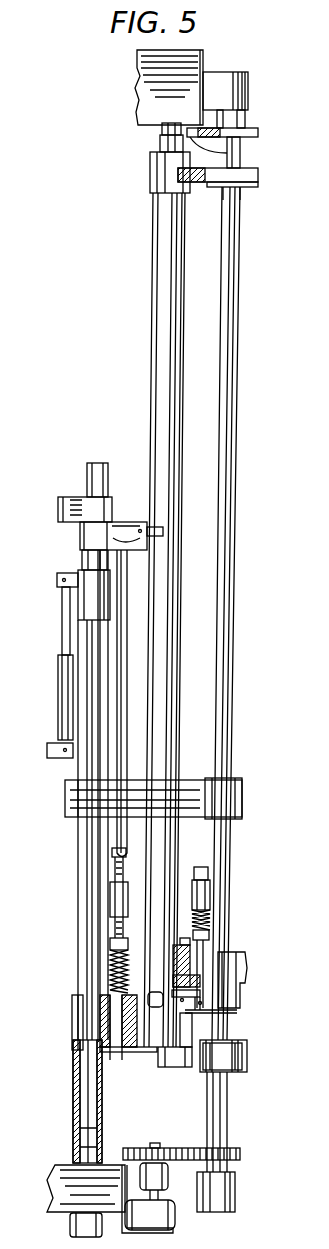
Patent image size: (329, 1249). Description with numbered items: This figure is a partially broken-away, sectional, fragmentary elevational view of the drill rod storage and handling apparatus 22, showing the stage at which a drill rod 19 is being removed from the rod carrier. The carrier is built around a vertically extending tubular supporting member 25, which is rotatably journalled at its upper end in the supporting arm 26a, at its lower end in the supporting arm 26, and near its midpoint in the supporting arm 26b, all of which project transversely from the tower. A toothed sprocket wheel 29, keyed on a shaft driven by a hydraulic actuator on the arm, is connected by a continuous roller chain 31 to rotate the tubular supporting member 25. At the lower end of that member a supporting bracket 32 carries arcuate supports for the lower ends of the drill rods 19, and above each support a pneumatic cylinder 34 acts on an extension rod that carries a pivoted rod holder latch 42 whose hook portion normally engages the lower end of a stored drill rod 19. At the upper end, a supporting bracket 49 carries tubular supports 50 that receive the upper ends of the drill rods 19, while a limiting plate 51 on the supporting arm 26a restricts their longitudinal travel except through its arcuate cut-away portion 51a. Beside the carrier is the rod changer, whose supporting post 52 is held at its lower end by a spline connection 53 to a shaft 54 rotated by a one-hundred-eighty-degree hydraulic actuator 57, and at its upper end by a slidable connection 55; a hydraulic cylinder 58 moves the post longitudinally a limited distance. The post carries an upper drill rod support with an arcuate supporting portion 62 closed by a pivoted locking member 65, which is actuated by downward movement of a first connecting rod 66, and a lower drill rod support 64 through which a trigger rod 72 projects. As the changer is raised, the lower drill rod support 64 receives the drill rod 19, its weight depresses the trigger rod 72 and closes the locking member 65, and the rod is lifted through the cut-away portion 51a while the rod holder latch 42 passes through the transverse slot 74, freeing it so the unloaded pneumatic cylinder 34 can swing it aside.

The drill rod 19 is at (163, 302).
The storage and handling apparatus 22 is at (108, 430).
The tubular supporting member 25 is at (228, 363).
The supporting arm 26 is at (72, 1187).
The supporting arm 26a is at (230, 88).
The supporting arm 26b is at (70, 800).
The toothed sprocket wheel 29 is at (130, 1148).
The roller chain 31 is at (185, 1160).
The supporting bracket 32 is at (243, 968).
The pneumatic cylinder 34 is at (205, 893).
The rod holder latch 42 is at (200, 1028).
The supporting bracket 49 is at (258, 175).
The tubular support 50 is at (153, 175).
The limiting plate 51 is at (258, 132).
The arcuate cut-away portion 51a is at (227, 153).
The supporting post 52 is at (80, 897).
The spline connection 53 is at (80, 1090).
The shaft 54 is at (80, 1147).
The slidable connection 55 is at (90, 505).
The hydraulic actuator 57 is at (70, 1225).
The hydraulic cylinder 58 is at (62, 700).
The arcuate supporting portion 62 is at (125, 527).
The lower drill rod support 64 is at (75, 1027).
The locking member 65 is at (158, 531).
The first connecting rod 66 is at (123, 655).
The trigger rod 72 is at (117, 1062).
The transverse slot 74 is at (166, 1050).